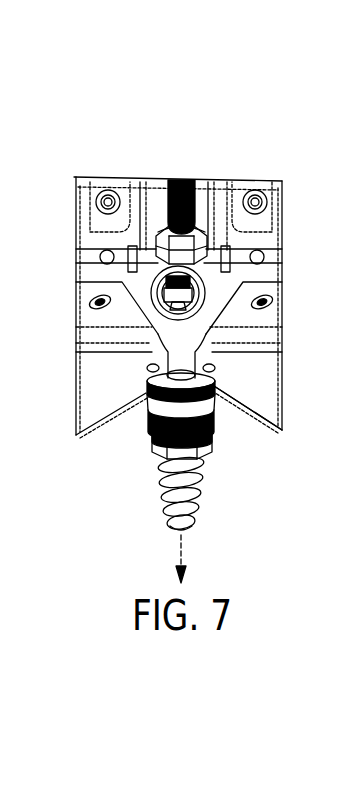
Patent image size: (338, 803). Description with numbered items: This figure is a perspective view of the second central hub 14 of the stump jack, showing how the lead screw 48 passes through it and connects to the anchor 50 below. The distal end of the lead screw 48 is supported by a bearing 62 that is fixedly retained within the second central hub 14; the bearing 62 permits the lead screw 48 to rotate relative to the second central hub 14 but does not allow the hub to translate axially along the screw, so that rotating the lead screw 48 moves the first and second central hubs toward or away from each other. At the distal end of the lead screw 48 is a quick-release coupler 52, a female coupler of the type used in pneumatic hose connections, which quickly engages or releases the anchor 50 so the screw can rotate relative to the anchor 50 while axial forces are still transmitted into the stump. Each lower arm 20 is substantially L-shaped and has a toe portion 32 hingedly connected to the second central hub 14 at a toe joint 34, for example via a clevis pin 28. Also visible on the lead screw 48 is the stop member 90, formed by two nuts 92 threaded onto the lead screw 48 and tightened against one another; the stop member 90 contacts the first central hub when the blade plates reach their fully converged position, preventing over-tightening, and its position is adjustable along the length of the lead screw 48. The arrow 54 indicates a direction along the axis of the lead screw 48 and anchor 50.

The second central hub 14 is at (223, 288).
The lower arm 20 is at (270, 400).
The clevis pin 28 is at (212, 384).
The toe portion 32 is at (242, 362).
The toe joint 34 is at (250, 300).
The lead screw 48 is at (167, 194).
The anchor 50 is at (162, 480).
The quick-release coupler 52 is at (150, 419).
The axis arrow 54 is at (186, 549).
The bearing 62 is at (254, 196).
The stop member 90 is at (158, 232).
The nuts 92 is at (124, 210).